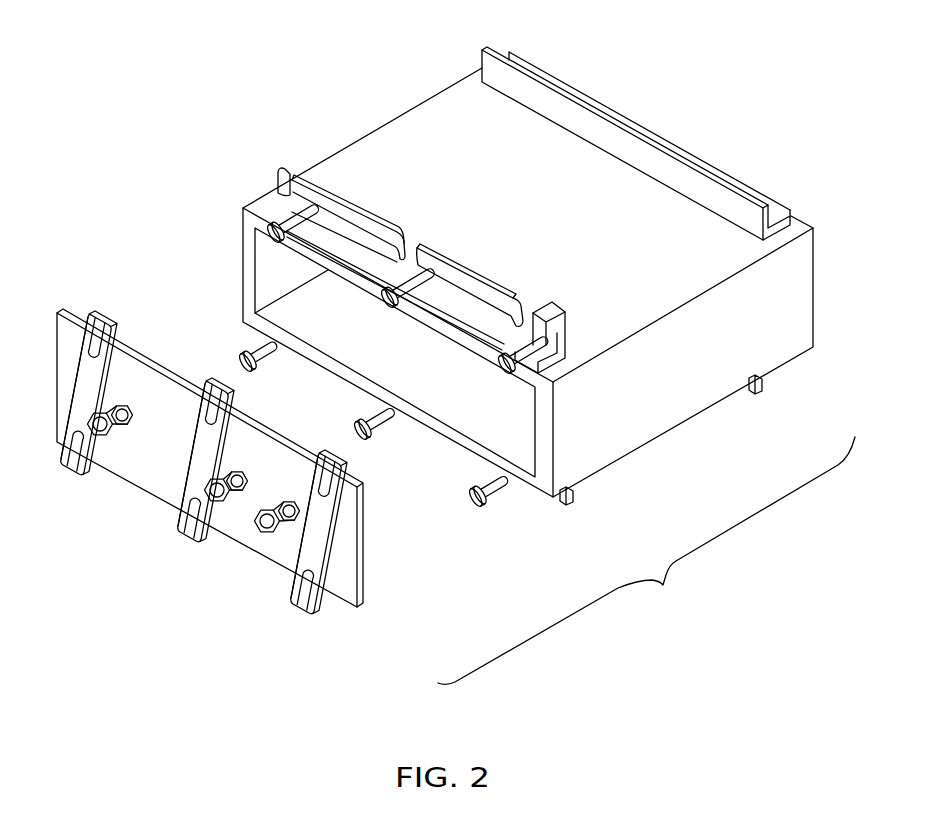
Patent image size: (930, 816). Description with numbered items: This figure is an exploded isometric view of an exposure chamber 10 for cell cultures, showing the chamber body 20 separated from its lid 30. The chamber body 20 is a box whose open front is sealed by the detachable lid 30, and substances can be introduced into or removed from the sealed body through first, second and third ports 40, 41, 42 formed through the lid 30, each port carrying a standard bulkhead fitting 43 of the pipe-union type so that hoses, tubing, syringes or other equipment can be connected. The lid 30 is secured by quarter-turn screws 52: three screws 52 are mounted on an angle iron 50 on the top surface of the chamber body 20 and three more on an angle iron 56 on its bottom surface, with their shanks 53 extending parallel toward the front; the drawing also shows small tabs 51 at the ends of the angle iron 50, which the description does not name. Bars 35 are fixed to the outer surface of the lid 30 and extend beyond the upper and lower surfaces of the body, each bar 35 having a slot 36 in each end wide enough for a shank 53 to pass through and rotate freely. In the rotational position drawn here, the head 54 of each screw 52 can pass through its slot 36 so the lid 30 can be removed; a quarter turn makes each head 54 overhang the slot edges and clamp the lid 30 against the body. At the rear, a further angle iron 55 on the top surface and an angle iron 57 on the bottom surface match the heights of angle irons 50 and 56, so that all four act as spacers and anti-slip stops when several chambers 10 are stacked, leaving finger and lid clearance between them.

The exposure chamber 10 is at (646, 560).
The chamber body 20 is at (815, 312).
The lid 30 is at (57, 350).
The bar 35 is at (63, 462).
The slot 36 is at (108, 318).
The first port 40 is at (134, 400).
The second port 41 is at (249, 462).
The third port 42 is at (291, 485).
The bulkhead fitting 43 is at (108, 440).
The angle iron 50 is at (368, 212).
The hook tab 51 is at (290, 173).
The screw 52 is at (409, 363).
The shank 53 is at (458, 286).
The head 54 is at (388, 295).
The angle iron 55 is at (484, 50).
The angle iron 56 is at (578, 493).
The angle iron 57 is at (766, 385).